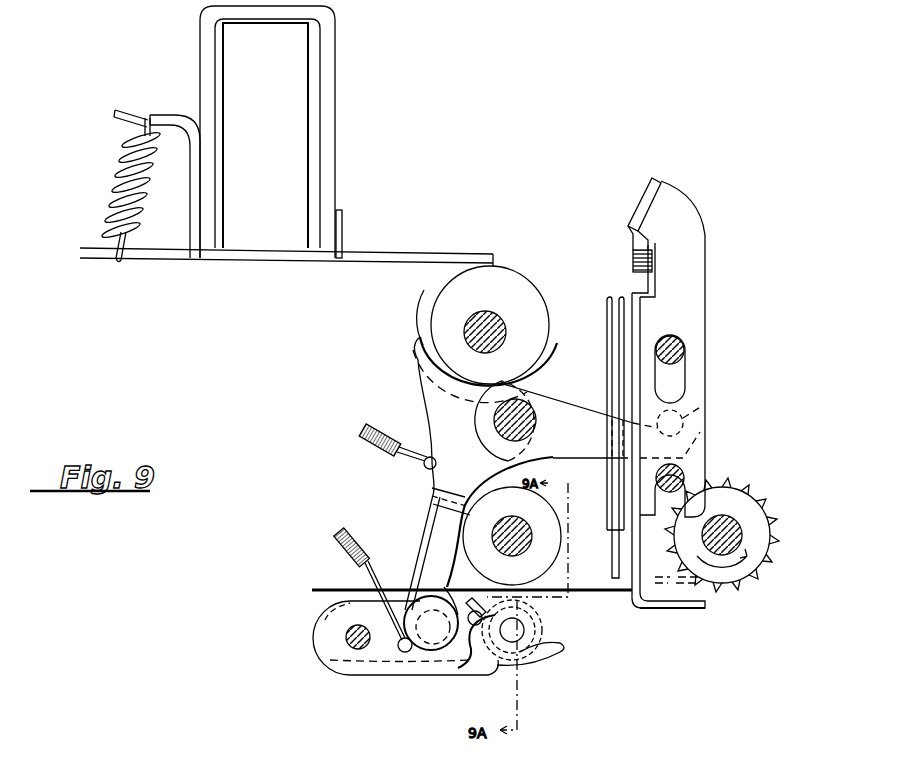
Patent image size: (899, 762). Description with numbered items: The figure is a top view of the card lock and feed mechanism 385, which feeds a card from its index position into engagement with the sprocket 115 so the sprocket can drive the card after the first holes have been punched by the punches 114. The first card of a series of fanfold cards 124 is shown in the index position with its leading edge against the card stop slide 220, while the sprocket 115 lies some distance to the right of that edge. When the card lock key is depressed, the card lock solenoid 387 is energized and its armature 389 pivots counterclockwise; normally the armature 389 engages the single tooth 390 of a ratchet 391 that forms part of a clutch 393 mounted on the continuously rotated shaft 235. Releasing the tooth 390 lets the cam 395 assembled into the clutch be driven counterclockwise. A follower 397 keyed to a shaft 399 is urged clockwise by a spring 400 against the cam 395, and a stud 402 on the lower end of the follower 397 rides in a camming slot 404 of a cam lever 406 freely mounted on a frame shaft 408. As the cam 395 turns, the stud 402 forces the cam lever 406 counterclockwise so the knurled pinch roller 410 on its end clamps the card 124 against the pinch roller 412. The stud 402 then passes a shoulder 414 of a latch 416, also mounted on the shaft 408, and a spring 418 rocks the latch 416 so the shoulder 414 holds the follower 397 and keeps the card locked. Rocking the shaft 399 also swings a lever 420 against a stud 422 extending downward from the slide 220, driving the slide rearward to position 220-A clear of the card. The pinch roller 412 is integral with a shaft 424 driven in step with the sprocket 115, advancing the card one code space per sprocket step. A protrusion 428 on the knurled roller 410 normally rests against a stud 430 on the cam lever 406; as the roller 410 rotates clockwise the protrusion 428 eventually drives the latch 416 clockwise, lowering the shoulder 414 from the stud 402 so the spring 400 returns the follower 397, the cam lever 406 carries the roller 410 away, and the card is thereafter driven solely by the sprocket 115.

The punches 114 is at (604, 298).
The sprocket 115 is at (767, 489).
The fanfold card 124 is at (318, 591).
The card stop slide 220 is at (706, 350).
The slide position 220-A is at (673, 585).
The continuously rotated shaft 235 is at (497, 312).
The card lock and feed mechanism 385 is at (691, 161).
The card lock solenoid 387 is at (295, 102).
The armature 389 is at (385, 255).
The single tooth 390 is at (490, 267).
The ratchet 391 is at (425, 292).
The clutch 393 is at (535, 250).
The cam 395 is at (423, 318).
The follower 397 is at (415, 362).
The shaft 399 is at (530, 402).
The spring 400 is at (362, 432).
The stud 402 is at (402, 672).
The camming slot 404 is at (472, 628).
The cam lever 406 is at (325, 657).
The frame shaft 408 is at (346, 637).
The knurled pinch roller 410 is at (543, 627).
The pinch roller 412 is at (480, 540).
The shoulder 414 is at (455, 660).
The latch 416 is at (560, 652).
The spring 418 is at (338, 535).
The lever 420 is at (700, 440).
The stud 422 is at (712, 408).
The shaft 424 is at (452, 497).
The protrusion 428 is at (450, 592).
The stud 430 is at (472, 660).